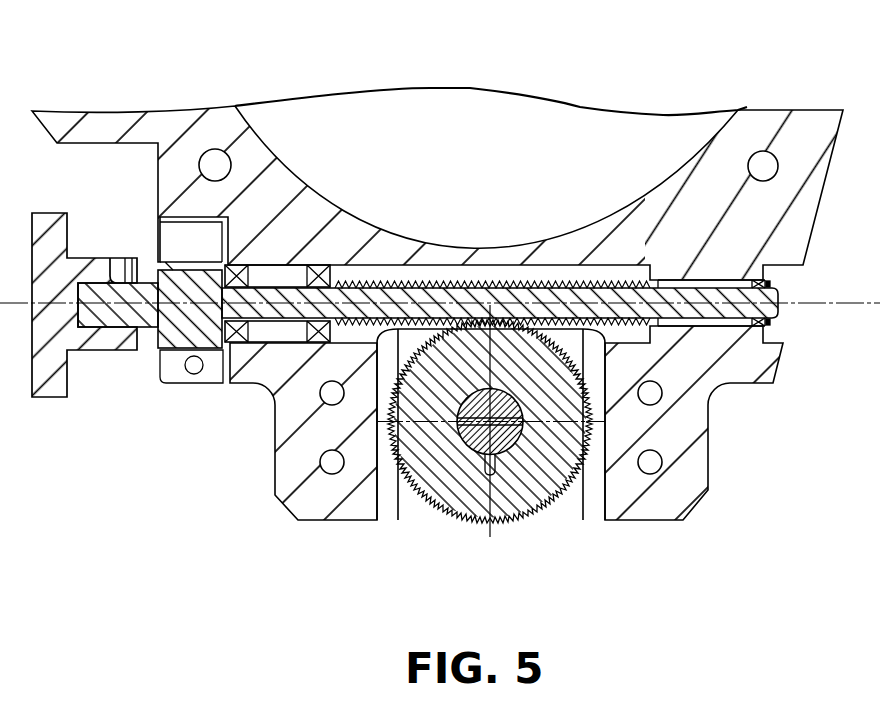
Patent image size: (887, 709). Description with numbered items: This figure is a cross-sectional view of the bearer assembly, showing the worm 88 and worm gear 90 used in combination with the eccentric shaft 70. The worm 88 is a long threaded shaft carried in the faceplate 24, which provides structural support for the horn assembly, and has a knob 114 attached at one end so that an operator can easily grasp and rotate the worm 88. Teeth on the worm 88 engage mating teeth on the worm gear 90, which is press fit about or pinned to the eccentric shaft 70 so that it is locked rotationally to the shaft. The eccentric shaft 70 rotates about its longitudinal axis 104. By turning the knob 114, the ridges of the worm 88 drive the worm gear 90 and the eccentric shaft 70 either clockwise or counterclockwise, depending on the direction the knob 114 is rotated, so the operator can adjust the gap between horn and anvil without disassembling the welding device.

The faceplate 24 is at (305, 217).
The worm 88 is at (596, 278).
The worm gear 90 is at (428, 498).
The eccentric shaft 70 is at (512, 452).
The longitudinal axis 104 is at (598, 425).
The knob 114 is at (33, 397).